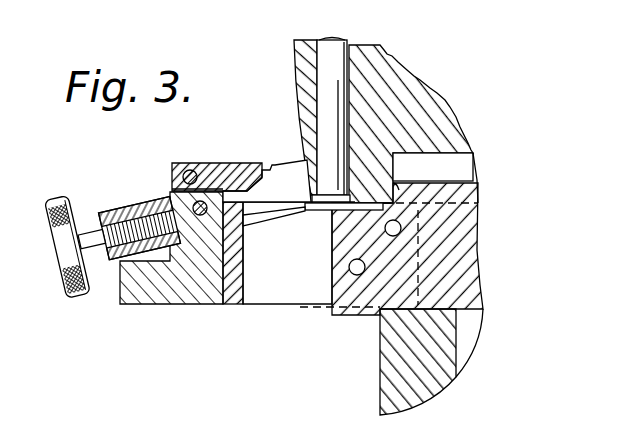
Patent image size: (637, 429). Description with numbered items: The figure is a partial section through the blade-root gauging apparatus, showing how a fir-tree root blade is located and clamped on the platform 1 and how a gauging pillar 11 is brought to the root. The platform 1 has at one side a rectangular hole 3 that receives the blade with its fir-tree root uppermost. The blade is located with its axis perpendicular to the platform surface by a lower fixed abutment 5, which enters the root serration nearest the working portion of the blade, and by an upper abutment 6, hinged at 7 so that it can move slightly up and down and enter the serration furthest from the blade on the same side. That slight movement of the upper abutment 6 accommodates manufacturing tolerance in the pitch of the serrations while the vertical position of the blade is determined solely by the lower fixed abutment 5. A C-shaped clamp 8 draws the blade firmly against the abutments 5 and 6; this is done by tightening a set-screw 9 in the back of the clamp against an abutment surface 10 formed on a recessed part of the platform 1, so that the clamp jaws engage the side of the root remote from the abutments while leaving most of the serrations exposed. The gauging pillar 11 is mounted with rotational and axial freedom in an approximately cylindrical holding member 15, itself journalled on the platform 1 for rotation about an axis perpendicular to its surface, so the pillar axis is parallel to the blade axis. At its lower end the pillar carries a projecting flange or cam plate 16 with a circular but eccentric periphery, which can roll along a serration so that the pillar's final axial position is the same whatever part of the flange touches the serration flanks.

The platform 1 is at (462, 250).
The rectangular hole 3 is at (320, 290).
The lower fixed abutment 5 is at (258, 209).
The upper abutment 6 is at (270, 167).
The hinge 7 is at (191, 170).
The C-shaped clamp 8 is at (133, 208).
The set-screw 9 is at (68, 300).
The abutment surface 10 is at (170, 236).
The gauging pillar 11 is at (349, 52).
The holding member 15 is at (437, 125).
The projecting flange or cam plate 16 is at (305, 211).